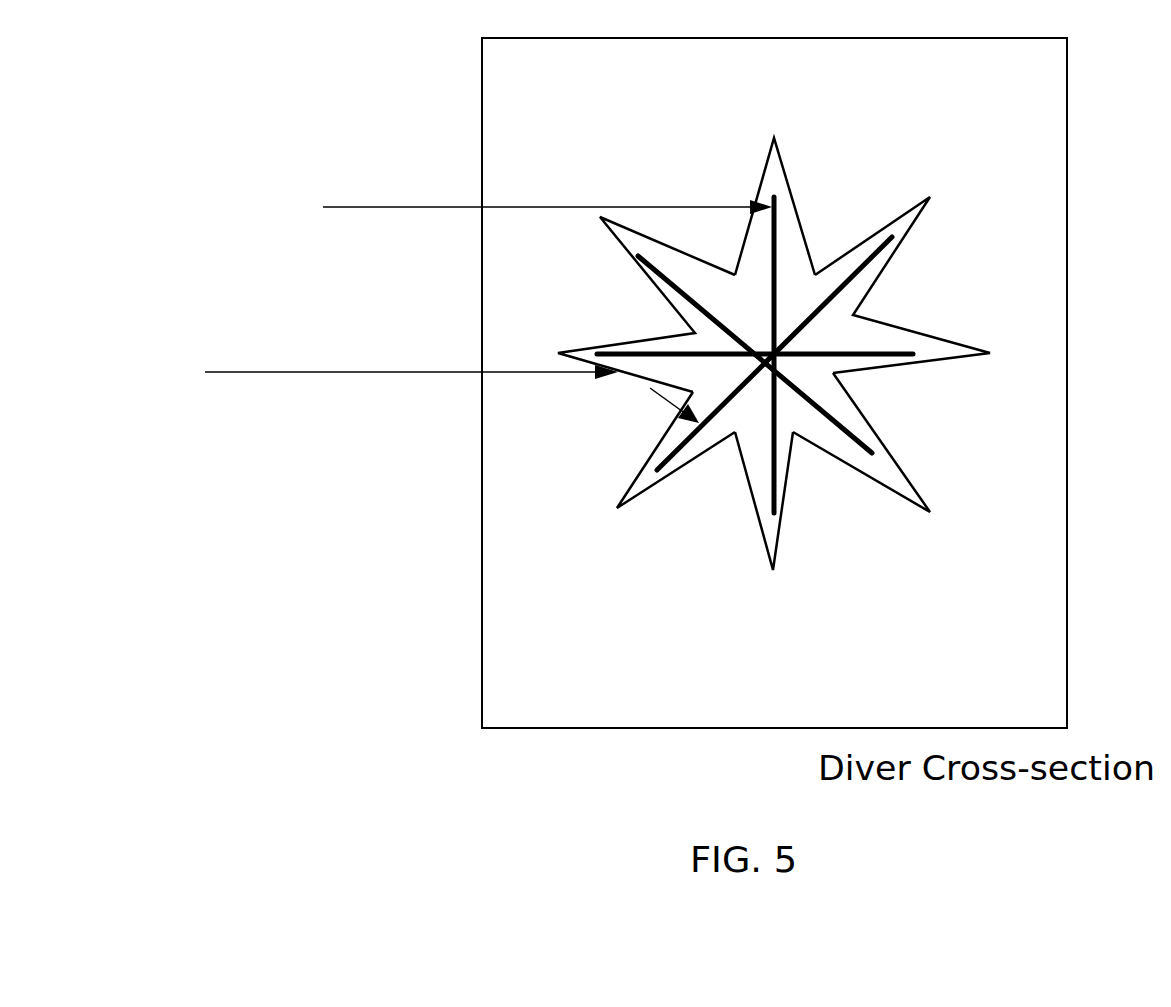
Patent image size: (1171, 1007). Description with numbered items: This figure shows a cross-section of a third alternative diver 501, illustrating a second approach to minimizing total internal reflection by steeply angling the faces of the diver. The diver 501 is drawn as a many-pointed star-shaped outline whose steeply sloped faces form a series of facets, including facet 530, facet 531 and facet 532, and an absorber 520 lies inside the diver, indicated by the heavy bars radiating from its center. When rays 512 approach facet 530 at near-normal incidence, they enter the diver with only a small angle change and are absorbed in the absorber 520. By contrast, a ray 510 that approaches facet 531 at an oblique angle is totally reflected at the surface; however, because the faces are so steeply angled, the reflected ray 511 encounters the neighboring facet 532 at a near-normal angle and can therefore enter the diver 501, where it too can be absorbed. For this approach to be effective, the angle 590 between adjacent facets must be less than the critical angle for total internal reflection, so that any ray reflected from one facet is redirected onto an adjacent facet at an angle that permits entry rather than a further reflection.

The diver 501 is at (790, 533).
The ray 510 is at (411, 360).
The reflected ray 511 is at (646, 405).
The rays 512 is at (547, 189).
The absorber 520 is at (765, 355).
The facet 530 is at (765, 178).
The facet 531 is at (755, 370).
The facet 532 is at (637, 462).
The angle between adjacent facets 590 is at (930, 373).